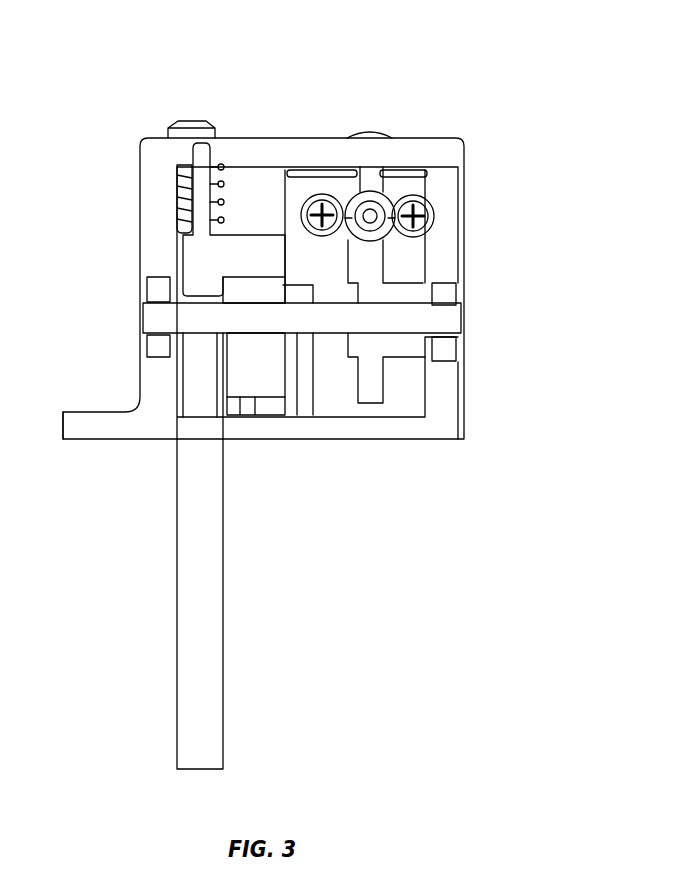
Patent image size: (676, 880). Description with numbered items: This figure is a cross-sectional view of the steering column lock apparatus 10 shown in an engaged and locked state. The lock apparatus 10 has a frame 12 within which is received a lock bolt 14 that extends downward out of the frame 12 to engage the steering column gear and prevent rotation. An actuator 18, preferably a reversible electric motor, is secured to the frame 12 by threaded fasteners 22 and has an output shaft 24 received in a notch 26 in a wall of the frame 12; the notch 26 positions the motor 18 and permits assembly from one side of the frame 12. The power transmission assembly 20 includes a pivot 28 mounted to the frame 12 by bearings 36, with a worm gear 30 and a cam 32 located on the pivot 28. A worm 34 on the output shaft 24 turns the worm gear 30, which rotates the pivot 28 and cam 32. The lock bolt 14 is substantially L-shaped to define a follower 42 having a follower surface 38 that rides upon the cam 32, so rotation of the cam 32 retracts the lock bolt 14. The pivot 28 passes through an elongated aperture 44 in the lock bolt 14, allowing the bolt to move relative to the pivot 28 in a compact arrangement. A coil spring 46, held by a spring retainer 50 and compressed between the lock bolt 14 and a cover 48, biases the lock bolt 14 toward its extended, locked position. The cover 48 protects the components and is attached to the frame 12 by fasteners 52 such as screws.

The lock apparatus 10 is at (506, 114).
The frame 12 is at (427, 441).
The lock bolt 14 is at (176, 591).
The actuator 18 is at (372, 132).
The power transmission assembly 20 is at (477, 310).
The threaded fasteners 22 is at (413, 222).
The output shaft 24 is at (372, 220).
The notch 26 is at (368, 181).
The pivot 28 is at (155, 315).
The worm gear 30 is at (385, 377).
The cam 32 is at (257, 367).
The worm 34 is at (382, 200).
The bearings 36 is at (155, 290).
The follower surface 38 is at (250, 275).
The follower 42 is at (253, 253).
The aperture 44 is at (192, 372).
The spring 46 is at (223, 177).
The cover 48 is at (297, 137).
The spring retainer 50 is at (202, 157).
The fasteners 52 is at (190, 121).